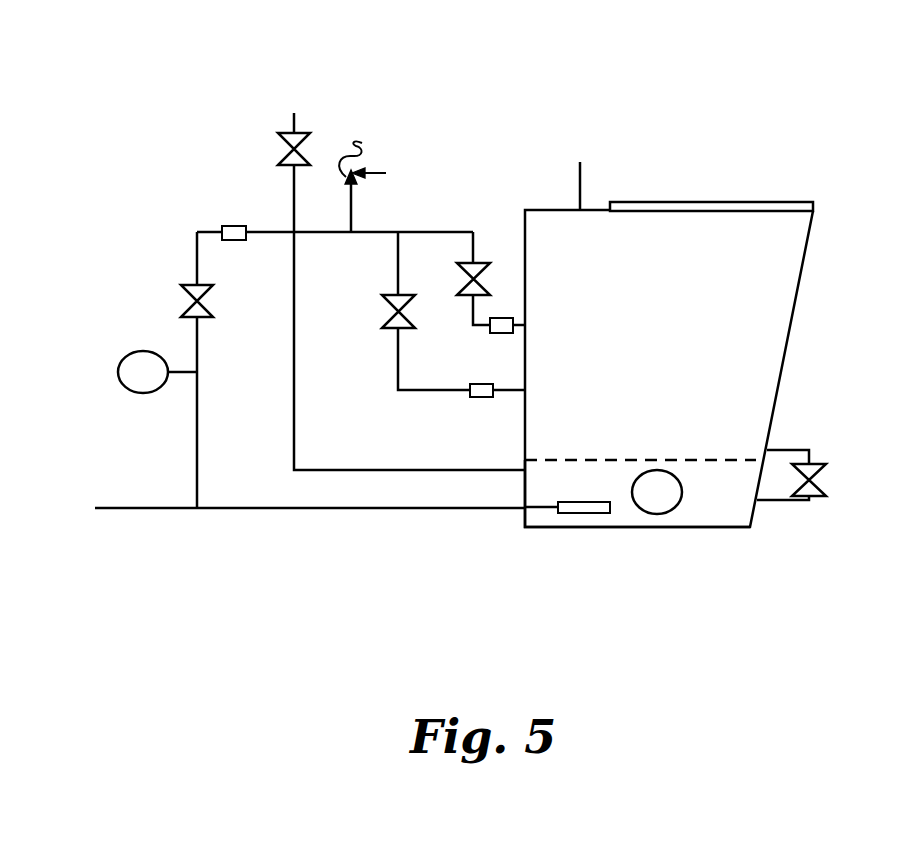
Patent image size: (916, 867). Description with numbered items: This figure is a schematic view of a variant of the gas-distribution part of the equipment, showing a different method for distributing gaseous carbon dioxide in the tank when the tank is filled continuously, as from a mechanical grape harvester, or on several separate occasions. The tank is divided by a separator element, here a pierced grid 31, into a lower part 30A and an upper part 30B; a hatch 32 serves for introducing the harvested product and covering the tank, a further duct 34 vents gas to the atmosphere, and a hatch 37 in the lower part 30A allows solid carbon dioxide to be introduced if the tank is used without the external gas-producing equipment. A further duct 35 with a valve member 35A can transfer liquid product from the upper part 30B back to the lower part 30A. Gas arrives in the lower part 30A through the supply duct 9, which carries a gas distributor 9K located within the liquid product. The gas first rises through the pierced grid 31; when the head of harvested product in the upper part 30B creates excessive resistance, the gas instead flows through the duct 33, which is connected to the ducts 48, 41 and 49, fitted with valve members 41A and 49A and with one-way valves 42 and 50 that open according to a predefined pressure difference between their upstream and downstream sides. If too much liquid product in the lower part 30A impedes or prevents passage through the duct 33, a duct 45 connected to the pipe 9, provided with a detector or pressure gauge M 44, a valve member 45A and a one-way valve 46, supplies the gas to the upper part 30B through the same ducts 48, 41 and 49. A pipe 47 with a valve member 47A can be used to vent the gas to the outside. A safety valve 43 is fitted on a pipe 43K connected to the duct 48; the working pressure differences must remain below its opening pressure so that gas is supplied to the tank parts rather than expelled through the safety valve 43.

The supply duct 9 is at (167, 509).
The gas distributor 9K is at (578, 513).
The lower part 30A is at (715, 485).
The upper part 30B is at (675, 345).
The pierced grid 31 is at (707, 458).
The hatch 32 is at (667, 202).
The duct 33 is at (294, 438).
The venting duct 34 is at (580, 178).
The transfer duct 35 is at (795, 450).
The valve member 35A is at (813, 488).
The hatch 37 is at (657, 513).
The duct 41 is at (397, 263).
The valve member 41A is at (395, 322).
The one-way valve 42 is at (478, 398).
The safety valve 43 is at (363, 151).
The pipe 43K is at (353, 210).
The pressure gauge 44 is at (146, 356).
The duct 45 is at (196, 463).
The valve member 45A is at (186, 286).
The one-way valve 46 is at (225, 228).
The pipe 47 is at (293, 198).
The valve member 47A is at (290, 140).
The duct 48 is at (326, 236).
The duct 49 is at (427, 228).
The valve member 49A is at (478, 260).
The one-way valve 50 is at (503, 328).